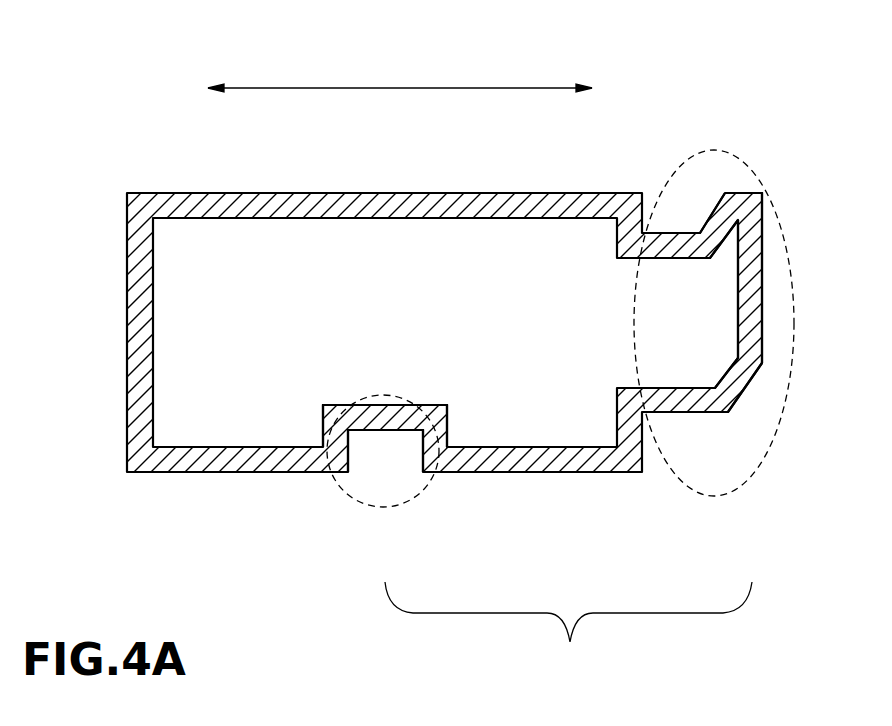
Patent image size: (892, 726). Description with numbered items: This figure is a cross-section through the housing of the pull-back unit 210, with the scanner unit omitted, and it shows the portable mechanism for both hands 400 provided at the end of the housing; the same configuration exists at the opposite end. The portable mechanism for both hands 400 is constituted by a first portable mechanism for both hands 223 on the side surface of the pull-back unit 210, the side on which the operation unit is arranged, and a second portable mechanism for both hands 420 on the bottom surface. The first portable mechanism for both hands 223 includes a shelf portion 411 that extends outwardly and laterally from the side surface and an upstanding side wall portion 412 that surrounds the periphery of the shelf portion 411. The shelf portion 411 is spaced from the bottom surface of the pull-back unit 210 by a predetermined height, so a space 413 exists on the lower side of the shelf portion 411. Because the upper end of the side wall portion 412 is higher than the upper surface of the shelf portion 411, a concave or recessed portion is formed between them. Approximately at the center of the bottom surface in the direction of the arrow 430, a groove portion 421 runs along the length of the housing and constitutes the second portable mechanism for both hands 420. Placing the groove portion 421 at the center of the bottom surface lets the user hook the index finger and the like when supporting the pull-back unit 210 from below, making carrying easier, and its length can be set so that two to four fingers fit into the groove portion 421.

The pull-back unit 210 is at (127, 362).
The arrow 430 is at (398, 88).
The shelf portion 411 is at (677, 233).
The side wall portion 412 is at (743, 193).
The space 413 is at (675, 448).
The first portable mechanism for both hands 223 is at (712, 497).
The groove portion 421 is at (378, 450).
The second portable mechanism for both hands 420 is at (425, 497).
The portable mechanism for both hands 400 is at (568, 629).